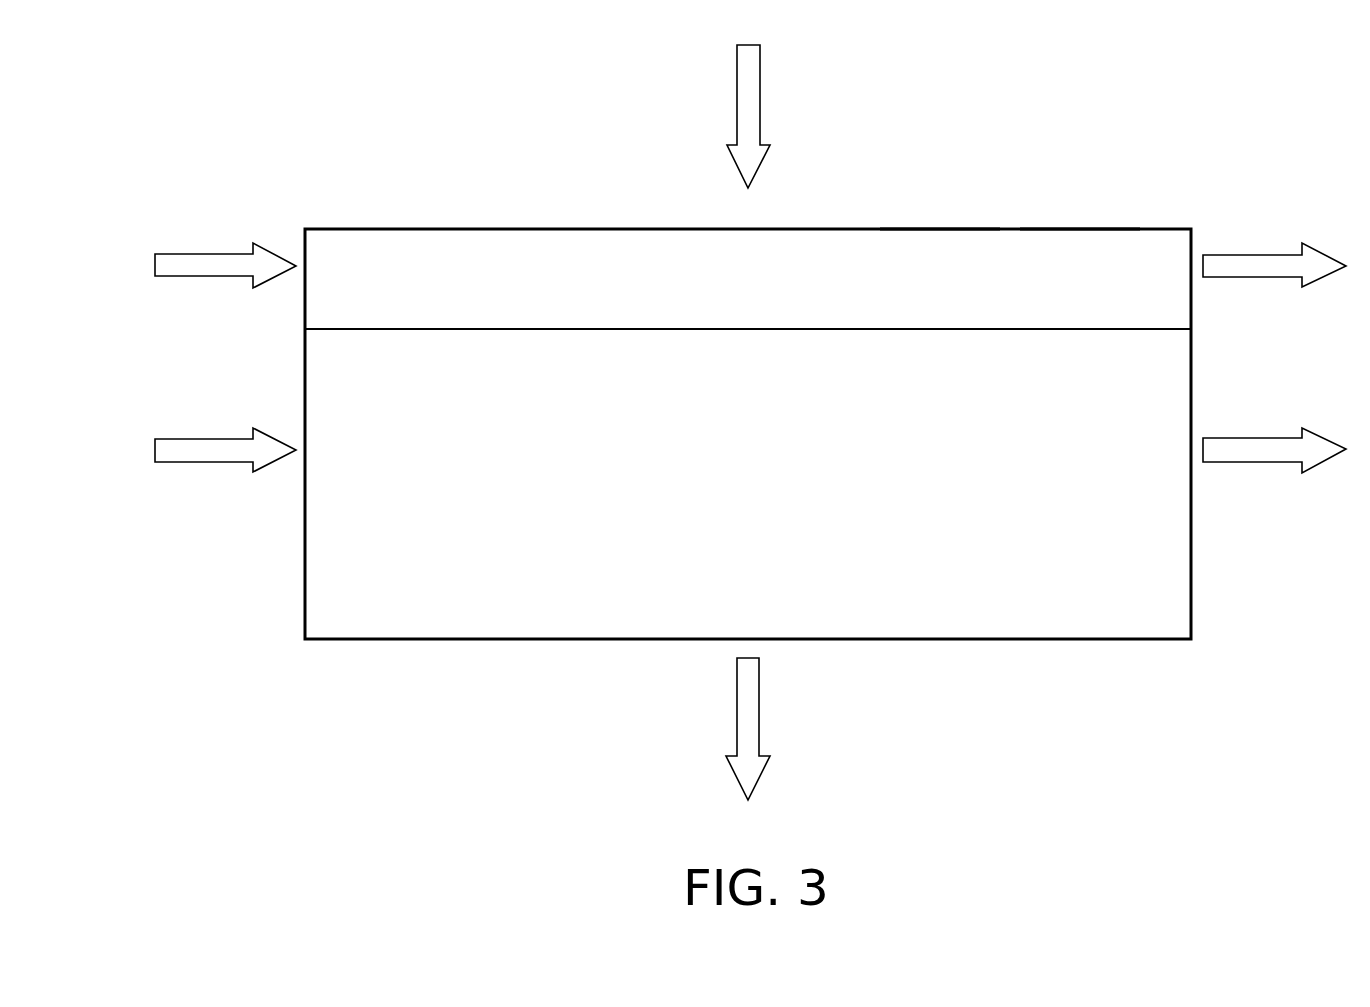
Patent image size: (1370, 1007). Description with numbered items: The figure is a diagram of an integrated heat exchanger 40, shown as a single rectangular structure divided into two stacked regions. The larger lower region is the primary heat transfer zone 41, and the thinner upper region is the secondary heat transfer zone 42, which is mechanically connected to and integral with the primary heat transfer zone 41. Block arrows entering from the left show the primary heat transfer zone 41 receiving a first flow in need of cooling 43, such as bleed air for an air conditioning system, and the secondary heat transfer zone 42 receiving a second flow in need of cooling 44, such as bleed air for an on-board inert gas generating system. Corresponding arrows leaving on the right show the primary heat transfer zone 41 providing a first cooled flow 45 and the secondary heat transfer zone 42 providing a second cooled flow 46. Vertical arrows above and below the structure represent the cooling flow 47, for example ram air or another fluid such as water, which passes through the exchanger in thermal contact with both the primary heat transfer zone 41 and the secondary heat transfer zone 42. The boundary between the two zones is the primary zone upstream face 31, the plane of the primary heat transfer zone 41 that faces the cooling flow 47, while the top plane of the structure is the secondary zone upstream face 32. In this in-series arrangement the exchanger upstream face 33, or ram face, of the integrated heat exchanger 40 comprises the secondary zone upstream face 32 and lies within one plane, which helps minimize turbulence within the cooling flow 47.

The integrated heat exchanger 40 is at (268, 116).
The primary heat transfer zone 41 is at (365, 539).
The secondary heat transfer zone 42 is at (615, 284).
The primary zone upstream face 31 is at (995, 328).
The secondary zone upstream face 32 is at (925, 228).
The exchanger upstream face 33 is at (1068, 228).
The first flow in need of cooling 43 is at (208, 438).
The second flow in need of cooling 44 is at (208, 252).
The first cooled flow 45 is at (1263, 438).
The second cooled flow 46 is at (1263, 253).
The cooling flow 47 is at (760, 87).